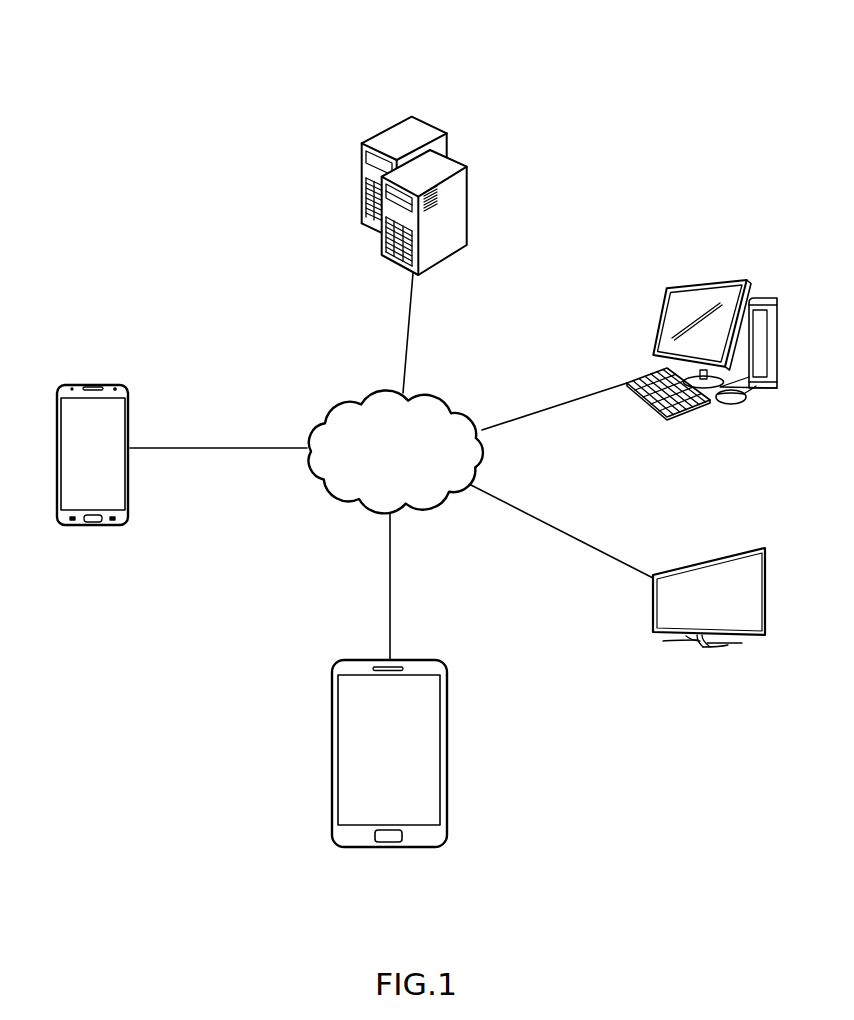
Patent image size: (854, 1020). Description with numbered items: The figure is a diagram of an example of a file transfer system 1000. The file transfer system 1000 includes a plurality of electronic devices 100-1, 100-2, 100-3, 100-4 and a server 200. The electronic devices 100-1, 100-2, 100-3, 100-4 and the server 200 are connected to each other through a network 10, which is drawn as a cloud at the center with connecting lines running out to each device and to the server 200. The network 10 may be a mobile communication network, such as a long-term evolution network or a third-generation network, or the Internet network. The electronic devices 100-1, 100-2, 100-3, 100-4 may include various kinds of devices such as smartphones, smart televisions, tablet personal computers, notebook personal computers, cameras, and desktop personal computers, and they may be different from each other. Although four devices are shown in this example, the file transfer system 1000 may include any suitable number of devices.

The file transfer system 1000 is at (615, 34).
The network 10 is at (443, 397).
The server 200 is at (412, 117).
The electronic device 100-1 is at (112, 383).
The electronic device 100-2 is at (433, 658).
The electronic device 100-3 is at (727, 553).
The electronic device 100-4 is at (705, 280).